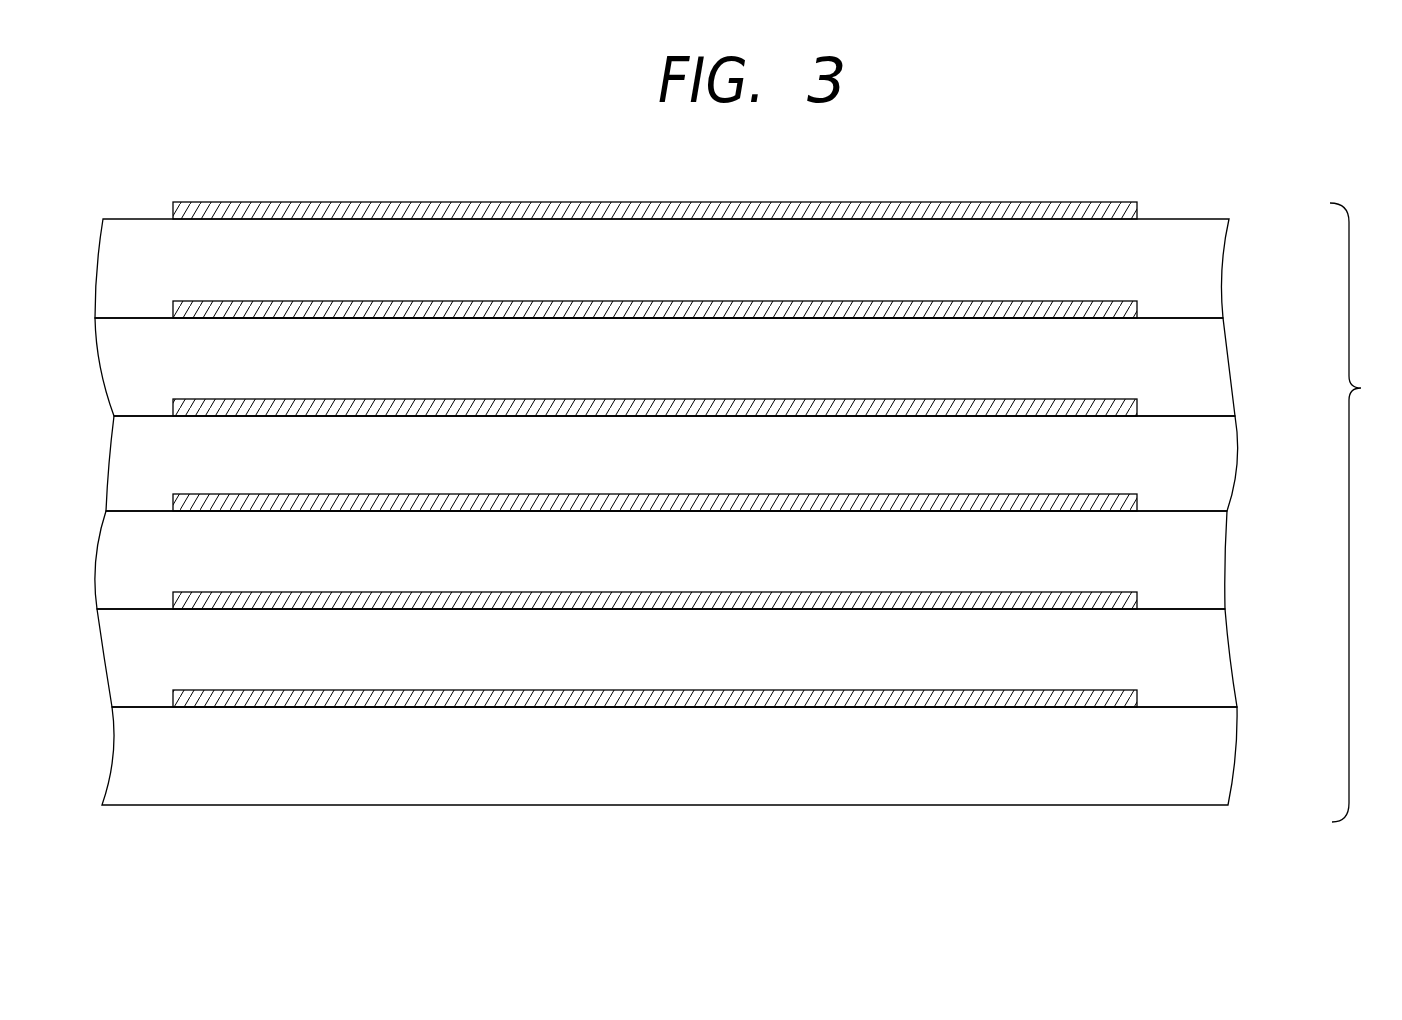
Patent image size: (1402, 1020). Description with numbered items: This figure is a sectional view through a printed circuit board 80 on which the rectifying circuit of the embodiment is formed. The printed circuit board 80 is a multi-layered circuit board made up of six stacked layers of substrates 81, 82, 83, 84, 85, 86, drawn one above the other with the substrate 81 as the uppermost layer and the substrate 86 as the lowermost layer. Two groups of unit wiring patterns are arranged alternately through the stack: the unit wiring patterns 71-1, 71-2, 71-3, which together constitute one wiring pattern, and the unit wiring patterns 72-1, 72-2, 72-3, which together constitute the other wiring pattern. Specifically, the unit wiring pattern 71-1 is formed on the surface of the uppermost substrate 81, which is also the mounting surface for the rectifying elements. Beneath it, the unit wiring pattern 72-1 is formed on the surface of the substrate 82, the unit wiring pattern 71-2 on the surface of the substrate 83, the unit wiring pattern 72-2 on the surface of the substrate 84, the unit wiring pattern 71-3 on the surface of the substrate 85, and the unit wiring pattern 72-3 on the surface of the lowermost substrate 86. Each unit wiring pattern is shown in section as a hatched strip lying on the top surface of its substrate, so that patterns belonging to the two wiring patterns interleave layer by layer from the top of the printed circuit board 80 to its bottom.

The unit wiring pattern 71-1 is at (266, 202).
The unit wiring pattern 71-2 is at (266, 399).
The unit wiring pattern 71-3 is at (266, 592).
The unit wiring pattern 72-1 is at (266, 301).
The unit wiring pattern 72-2 is at (266, 494).
The unit wiring pattern 72-3 is at (266, 690).
The printed circuit board 80 is at (1364, 512).
The substrate 81 is at (1193, 270).
The substrate 82 is at (1193, 360).
The substrate 83 is at (1193, 454).
The substrate 84 is at (1193, 555).
The substrate 85 is at (1193, 645).
The substrate 86 is at (1193, 754).